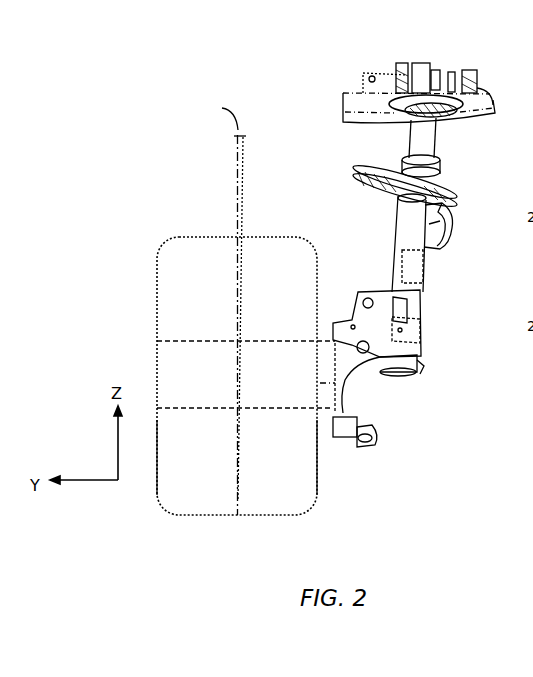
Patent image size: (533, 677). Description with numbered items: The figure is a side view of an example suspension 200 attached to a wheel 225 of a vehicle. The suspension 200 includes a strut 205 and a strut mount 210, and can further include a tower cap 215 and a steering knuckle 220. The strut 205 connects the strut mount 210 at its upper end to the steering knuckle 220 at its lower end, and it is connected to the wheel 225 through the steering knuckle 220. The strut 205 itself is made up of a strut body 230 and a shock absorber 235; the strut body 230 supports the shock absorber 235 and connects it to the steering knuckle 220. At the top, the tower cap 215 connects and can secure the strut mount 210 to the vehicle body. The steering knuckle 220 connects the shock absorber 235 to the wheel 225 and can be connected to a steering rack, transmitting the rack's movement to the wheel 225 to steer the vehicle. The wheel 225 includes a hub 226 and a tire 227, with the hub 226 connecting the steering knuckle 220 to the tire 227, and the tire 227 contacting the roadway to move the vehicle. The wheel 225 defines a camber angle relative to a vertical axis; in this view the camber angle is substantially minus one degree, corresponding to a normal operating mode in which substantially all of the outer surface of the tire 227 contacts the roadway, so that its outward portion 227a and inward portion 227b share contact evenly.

The suspension 200 is at (289, 86).
The strut 205 is at (464, 163).
The strut mount 210 is at (471, 53).
The tower cap 215 is at (373, 87).
The steering knuckle 220 is at (343, 387).
The wheel 225 is at (191, 197).
The hub 226 is at (178, 341).
The tire 227 is at (168, 240).
The outward portion 227a is at (199, 506).
The inward portion 227b is at (277, 505).
The strut body 230 is at (400, 232).
The shock absorber 235 is at (420, 137).